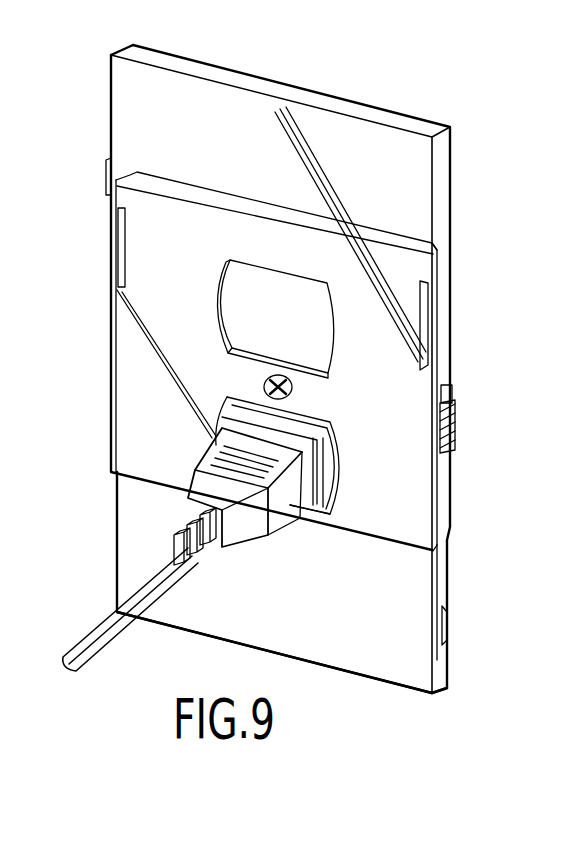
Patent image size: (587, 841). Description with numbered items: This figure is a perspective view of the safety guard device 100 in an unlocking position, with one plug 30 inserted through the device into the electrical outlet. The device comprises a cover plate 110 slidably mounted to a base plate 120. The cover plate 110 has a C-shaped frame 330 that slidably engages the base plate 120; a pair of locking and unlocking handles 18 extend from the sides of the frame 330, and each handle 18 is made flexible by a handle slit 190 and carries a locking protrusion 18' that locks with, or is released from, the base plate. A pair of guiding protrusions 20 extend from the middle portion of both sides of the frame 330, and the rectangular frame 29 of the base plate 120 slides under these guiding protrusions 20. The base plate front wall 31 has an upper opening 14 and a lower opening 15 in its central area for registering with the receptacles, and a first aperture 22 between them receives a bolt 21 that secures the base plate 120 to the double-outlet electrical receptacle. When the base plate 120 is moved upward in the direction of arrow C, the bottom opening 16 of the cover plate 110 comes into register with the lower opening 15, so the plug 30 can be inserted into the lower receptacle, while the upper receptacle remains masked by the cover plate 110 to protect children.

The safety guard device 100 is at (364, 91).
The cover plate 110 is at (464, 177).
The base plate 120 is at (351, 678).
The C-shaped frame 330 is at (296, 93).
The locking and unlocking handle 18 is at (283, 298).
The locking protrusion 18' is at (484, 638).
The arrow C is at (73, 280).
The guiding protrusion 20 is at (118, 284).
The rectangular frame 29 is at (431, 243).
The handle slit 190 is at (450, 395).
The upper opening 14 is at (238, 293).
The bolt 21 is at (291, 387).
The first aperture 22 is at (265, 382).
The lower opening 15 is at (333, 490).
The bottom opening 16 is at (320, 511).
The plug 30 is at (205, 480).
The base plate front wall 31 is at (410, 592).